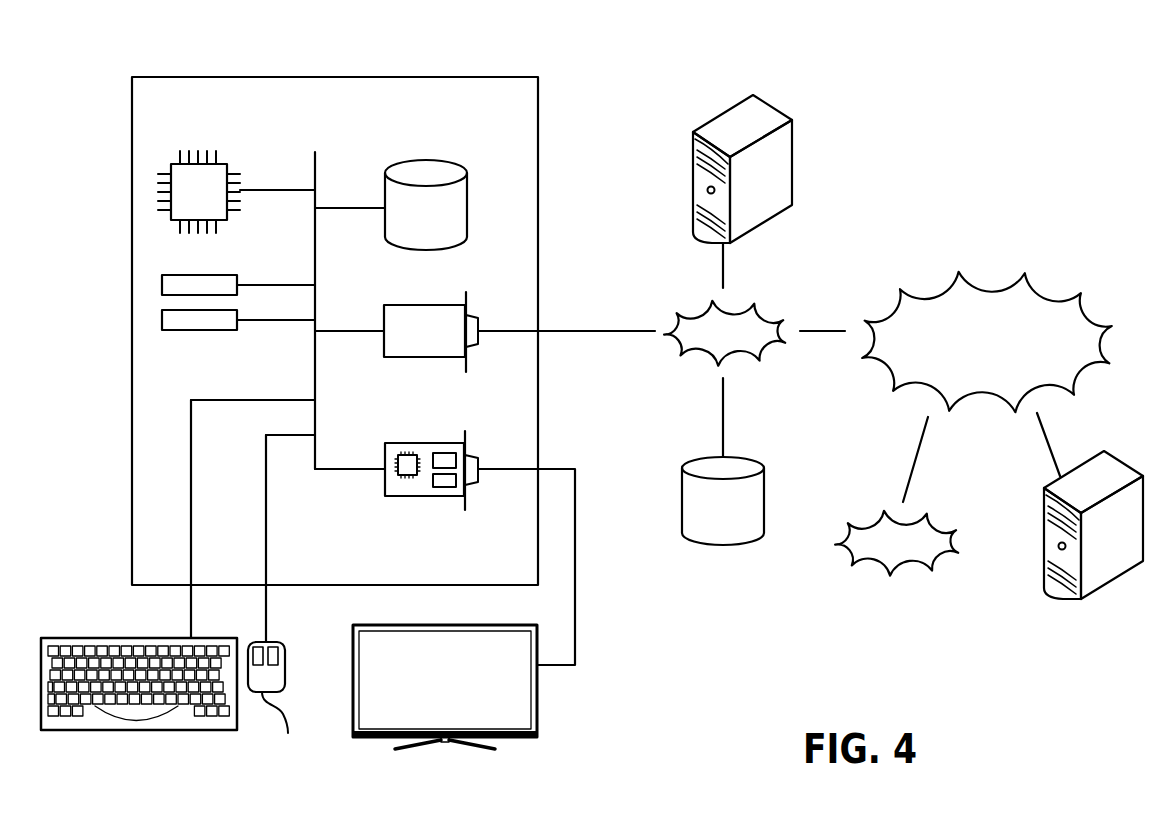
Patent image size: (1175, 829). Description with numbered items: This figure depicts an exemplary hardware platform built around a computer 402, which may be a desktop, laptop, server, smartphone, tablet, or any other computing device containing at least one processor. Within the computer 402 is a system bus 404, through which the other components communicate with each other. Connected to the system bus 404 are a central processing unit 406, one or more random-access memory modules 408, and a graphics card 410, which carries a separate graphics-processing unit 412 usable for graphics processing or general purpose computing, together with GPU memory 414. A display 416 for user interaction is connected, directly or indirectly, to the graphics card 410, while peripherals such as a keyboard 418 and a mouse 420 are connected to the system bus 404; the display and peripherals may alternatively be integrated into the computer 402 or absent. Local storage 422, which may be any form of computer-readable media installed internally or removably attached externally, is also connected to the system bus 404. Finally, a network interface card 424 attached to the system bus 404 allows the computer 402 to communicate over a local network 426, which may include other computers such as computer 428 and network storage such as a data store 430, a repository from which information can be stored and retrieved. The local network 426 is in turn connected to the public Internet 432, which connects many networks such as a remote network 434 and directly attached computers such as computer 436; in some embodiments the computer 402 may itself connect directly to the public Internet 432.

The computer 402 is at (493, 77).
The system bus 404 is at (316, 165).
The central processing unit 406 is at (222, 160).
The random-access memory modules 408 is at (237, 283).
The graphics card 410 is at (452, 536).
The graphics-processing unit 412 is at (407, 476).
The GPU memory 414 is at (445, 488).
The display 416 is at (537, 716).
The keyboard 418 is at (140, 731).
The mouse 420 is at (275, 605).
The local storage 422 is at (470, 192).
The network interface card 424 is at (383, 313).
The local network 426 is at (775, 290).
The computer 428 is at (777, 108).
The data store 430 is at (757, 458).
The public Internet 432 is at (1025, 254).
The remote network 434 is at (950, 500).
The computer 436 is at (1118, 463).